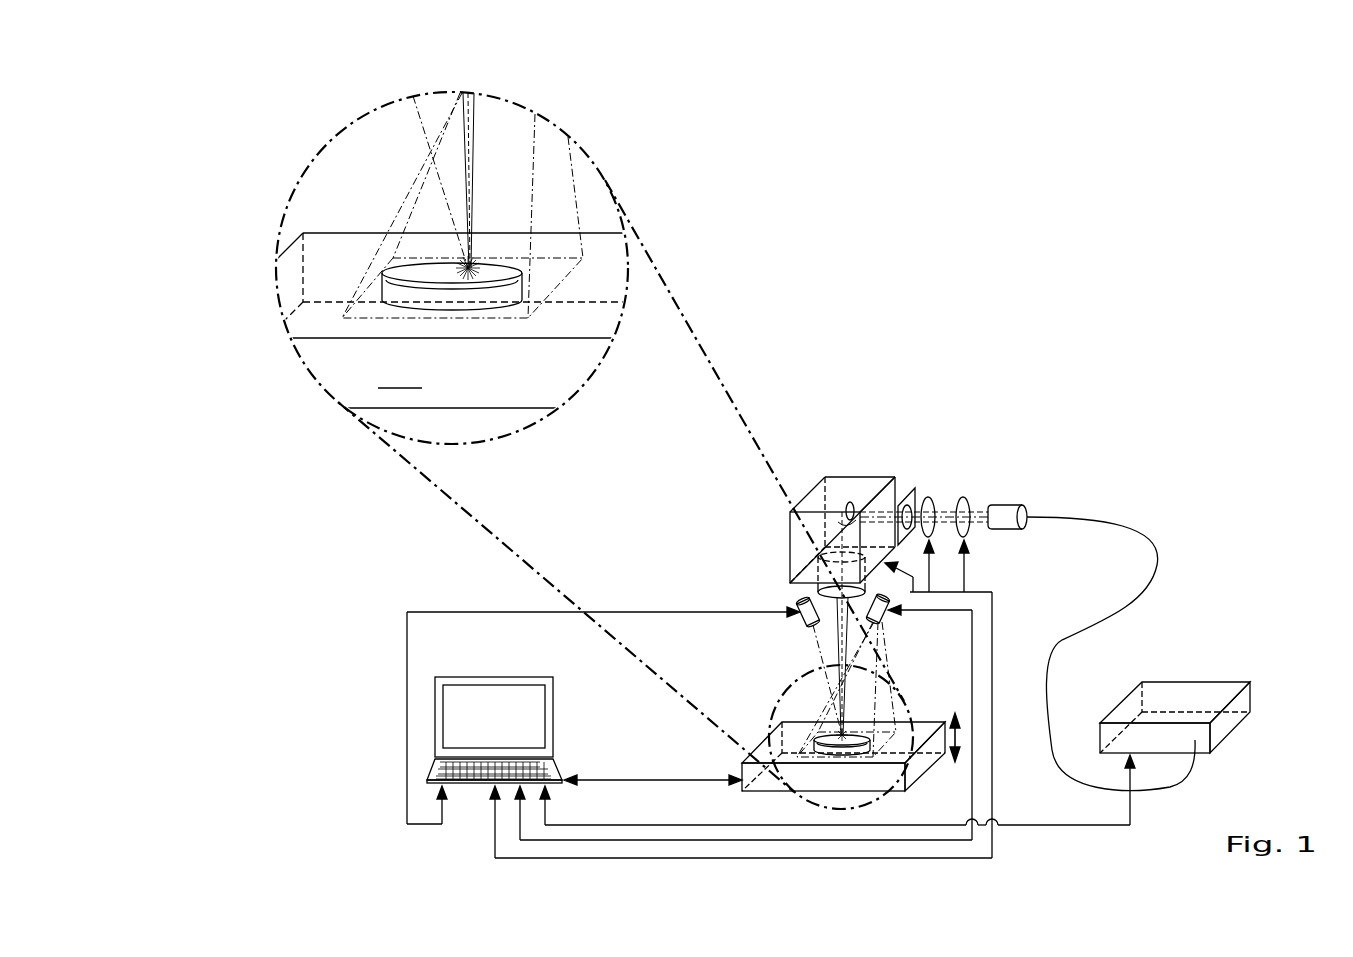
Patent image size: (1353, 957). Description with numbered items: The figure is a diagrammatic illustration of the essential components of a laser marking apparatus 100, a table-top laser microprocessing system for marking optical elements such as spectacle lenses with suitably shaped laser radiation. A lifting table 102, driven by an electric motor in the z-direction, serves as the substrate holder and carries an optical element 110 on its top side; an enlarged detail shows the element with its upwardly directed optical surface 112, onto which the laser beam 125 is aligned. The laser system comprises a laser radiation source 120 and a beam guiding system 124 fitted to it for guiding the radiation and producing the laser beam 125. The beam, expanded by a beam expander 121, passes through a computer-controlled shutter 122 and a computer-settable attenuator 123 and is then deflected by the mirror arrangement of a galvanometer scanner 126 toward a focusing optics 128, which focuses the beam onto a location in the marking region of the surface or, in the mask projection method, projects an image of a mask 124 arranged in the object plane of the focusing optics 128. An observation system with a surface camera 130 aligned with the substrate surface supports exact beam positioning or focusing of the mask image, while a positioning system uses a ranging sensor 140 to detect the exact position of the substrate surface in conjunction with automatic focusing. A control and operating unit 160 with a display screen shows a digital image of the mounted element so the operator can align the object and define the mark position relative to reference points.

The laser marking apparatus 100 is at (959, 378).
The lifting table 102 is at (921, 768).
The optical element 110 is at (507, 296).
The optical surface 112 is at (412, 262).
The laser radiation source 120 is at (1186, 654).
The beam expander 121 is at (1010, 505).
The shutter 122 is at (965, 497).
The attenuator 123 is at (928, 497).
The beam guiding system / mask 124 is at (906, 492).
The laser beam 125 is at (472, 155).
The galvanometer scanner 126 is at (849, 481).
The focusing optics 128 is at (822, 570).
The surface camera 130 is at (888, 618).
The ranging sensor 140 is at (800, 618).
The control and operating unit 160 is at (572, 744).